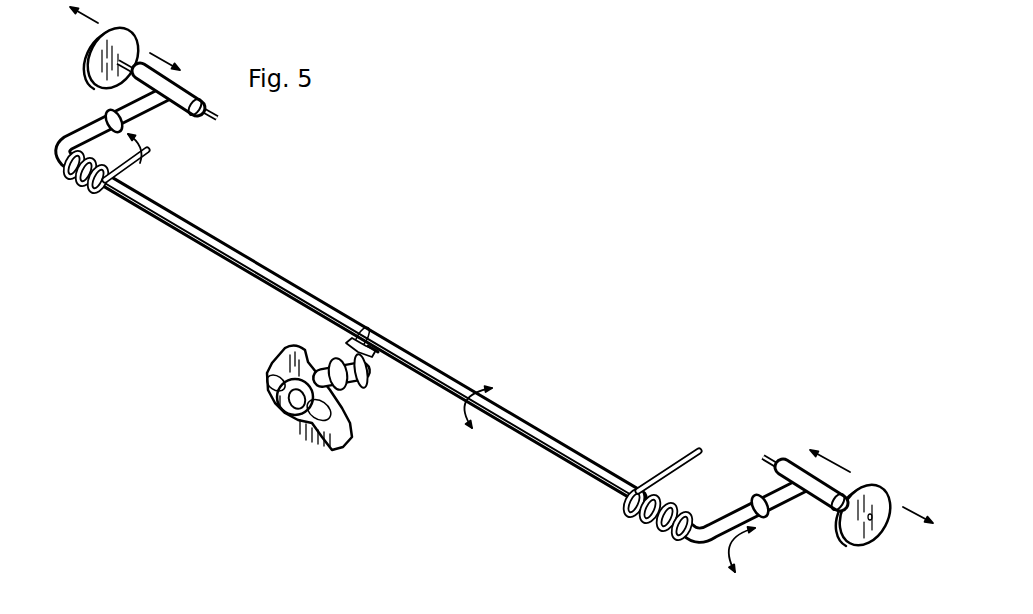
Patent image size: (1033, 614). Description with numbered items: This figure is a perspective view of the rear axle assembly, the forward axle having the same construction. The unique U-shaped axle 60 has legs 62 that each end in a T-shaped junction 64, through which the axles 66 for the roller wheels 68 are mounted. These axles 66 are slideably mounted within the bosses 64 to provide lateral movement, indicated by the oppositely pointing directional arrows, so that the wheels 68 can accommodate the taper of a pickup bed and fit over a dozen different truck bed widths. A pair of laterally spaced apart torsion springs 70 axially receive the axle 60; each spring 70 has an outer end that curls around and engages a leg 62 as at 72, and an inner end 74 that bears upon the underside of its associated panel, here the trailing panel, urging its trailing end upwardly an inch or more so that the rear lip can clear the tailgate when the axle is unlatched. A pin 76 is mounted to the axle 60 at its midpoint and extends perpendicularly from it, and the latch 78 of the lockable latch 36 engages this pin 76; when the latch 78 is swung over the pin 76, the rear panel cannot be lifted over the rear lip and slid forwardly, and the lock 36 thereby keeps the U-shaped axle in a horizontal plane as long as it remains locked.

The lockable latch 36 is at (273, 406).
The U-shaped axle 60 is at (274, 276).
The leg 62 is at (148, 110).
The T-shaped junction 64 is at (183, 76).
The axle 66 is at (220, 114).
The roller wheel 68 is at (130, 33).
The torsion spring 70 is at (104, 192).
The outer end engagement 72 is at (110, 117).
The inner end 74 is at (683, 460).
The pin 76 is at (371, 329).
The latch 78 is at (364, 381).